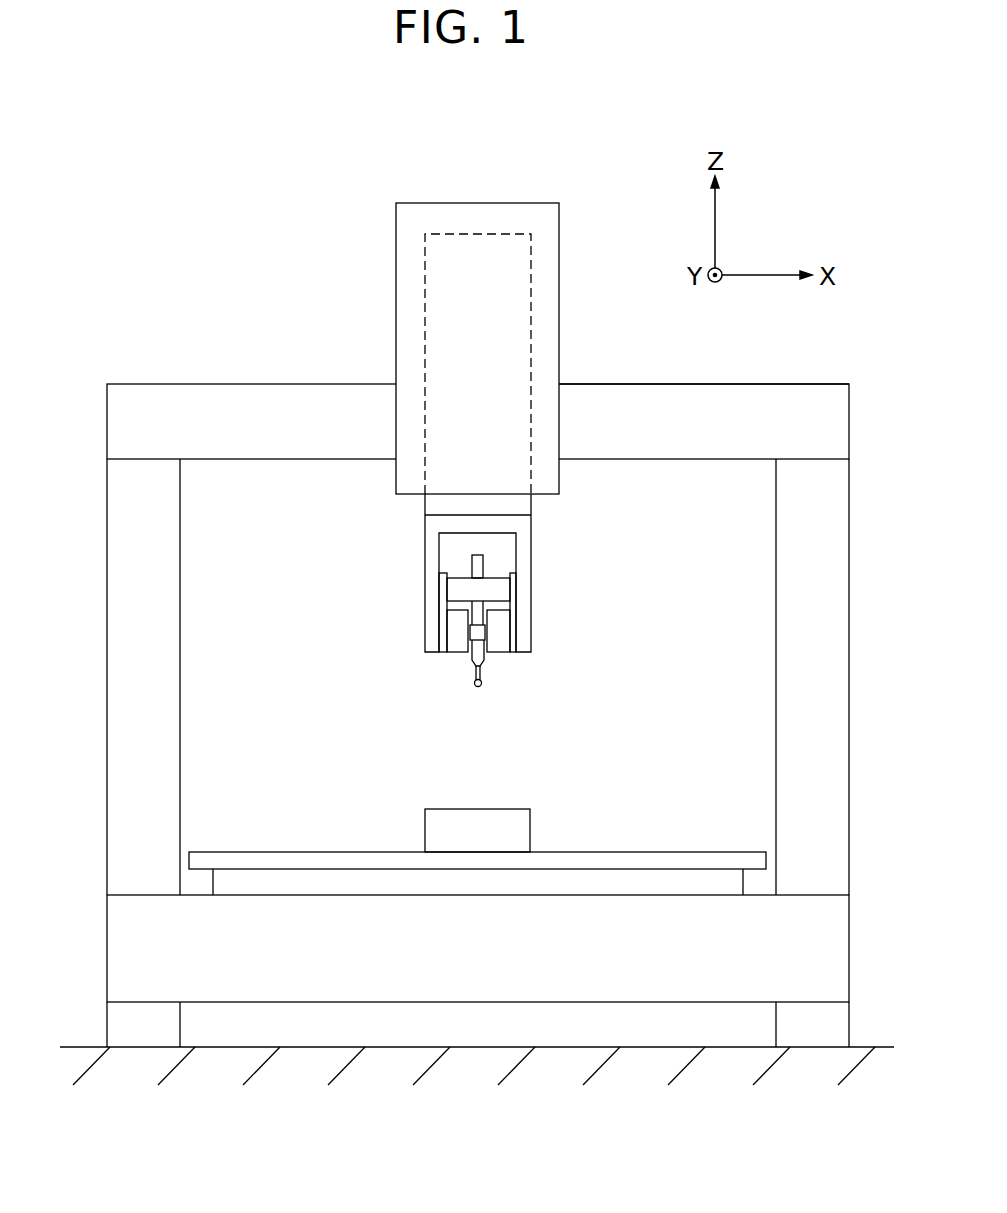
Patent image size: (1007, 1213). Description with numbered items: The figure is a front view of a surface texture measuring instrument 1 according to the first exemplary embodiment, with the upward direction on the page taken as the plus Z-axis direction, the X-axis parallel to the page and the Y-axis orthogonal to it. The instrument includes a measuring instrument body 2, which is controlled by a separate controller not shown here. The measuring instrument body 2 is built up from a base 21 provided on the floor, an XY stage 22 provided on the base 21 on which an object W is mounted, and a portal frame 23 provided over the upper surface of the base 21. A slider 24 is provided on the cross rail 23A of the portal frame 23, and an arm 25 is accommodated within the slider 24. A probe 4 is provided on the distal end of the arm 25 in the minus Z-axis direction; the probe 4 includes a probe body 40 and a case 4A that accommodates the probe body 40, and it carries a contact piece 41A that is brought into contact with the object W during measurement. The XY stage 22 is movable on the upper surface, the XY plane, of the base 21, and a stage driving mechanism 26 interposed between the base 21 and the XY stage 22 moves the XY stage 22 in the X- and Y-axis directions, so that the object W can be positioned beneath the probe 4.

The surface texture measuring instrument 1 is at (342, 94).
The measuring instrument body 2 is at (323, 208).
The probe 4 is at (547, 584).
The case 4A is at (426, 565).
The base 21 is at (138, 952).
The XY stage 22 is at (287, 855).
The portal frame 23 is at (218, 374).
The cross rail 23A is at (705, 393).
The slider 24 is at (547, 287).
The arm 25 is at (525, 338).
The stage driving mechanism 26 is at (650, 878).
The probe body 40 is at (458, 661).
The contact piece 41A is at (476, 688).